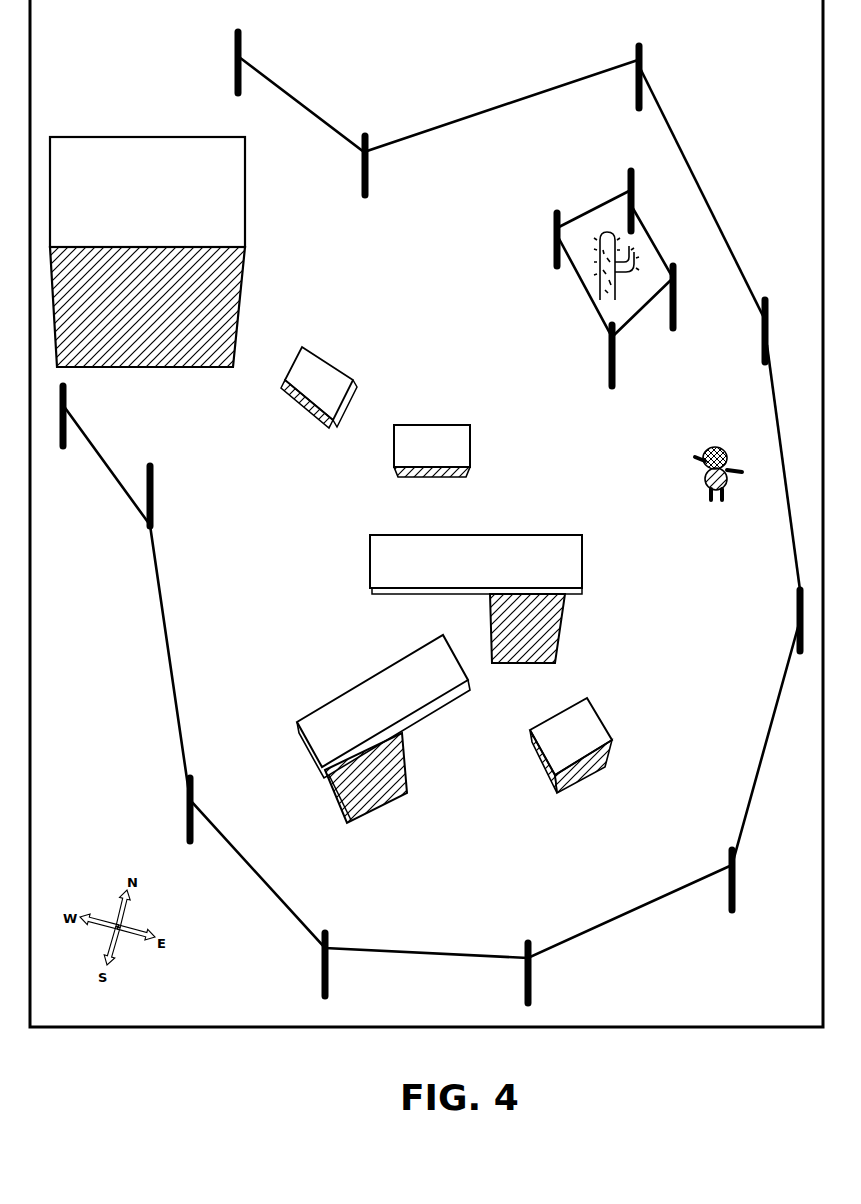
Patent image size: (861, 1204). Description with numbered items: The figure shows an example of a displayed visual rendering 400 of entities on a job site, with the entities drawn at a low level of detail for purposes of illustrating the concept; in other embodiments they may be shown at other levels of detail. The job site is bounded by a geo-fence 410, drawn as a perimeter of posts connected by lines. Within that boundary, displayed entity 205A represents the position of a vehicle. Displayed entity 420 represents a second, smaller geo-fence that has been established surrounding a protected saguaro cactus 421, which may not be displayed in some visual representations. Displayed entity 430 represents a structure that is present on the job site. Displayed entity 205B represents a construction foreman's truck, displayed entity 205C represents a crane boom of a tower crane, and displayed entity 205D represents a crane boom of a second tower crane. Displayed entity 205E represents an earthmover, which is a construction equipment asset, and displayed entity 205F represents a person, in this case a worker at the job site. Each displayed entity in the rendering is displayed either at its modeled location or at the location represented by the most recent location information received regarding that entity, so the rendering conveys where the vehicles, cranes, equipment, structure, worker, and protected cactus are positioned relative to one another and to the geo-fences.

The displayed visual rendering 400 is at (132, 62).
The geo-fence 410 is at (665, 99).
The displayed entity representing geo-fence 420 is at (598, 207).
The protected saguaro cactus 421 is at (634, 262).
The displayed entity representing structure 430 is at (245, 257).
The displayed entity representing vehicle 205A is at (320, 358).
The displayed entity representing construction foreman's truck 205B is at (436, 424).
The displayed entity representing crane boom 205C is at (527, 534).
The displayed entity representing crane boom of second tower crane 205D is at (362, 683).
The displayed entity representing earthmover 205E is at (593, 718).
The displayed entity representing person 205F is at (706, 448).